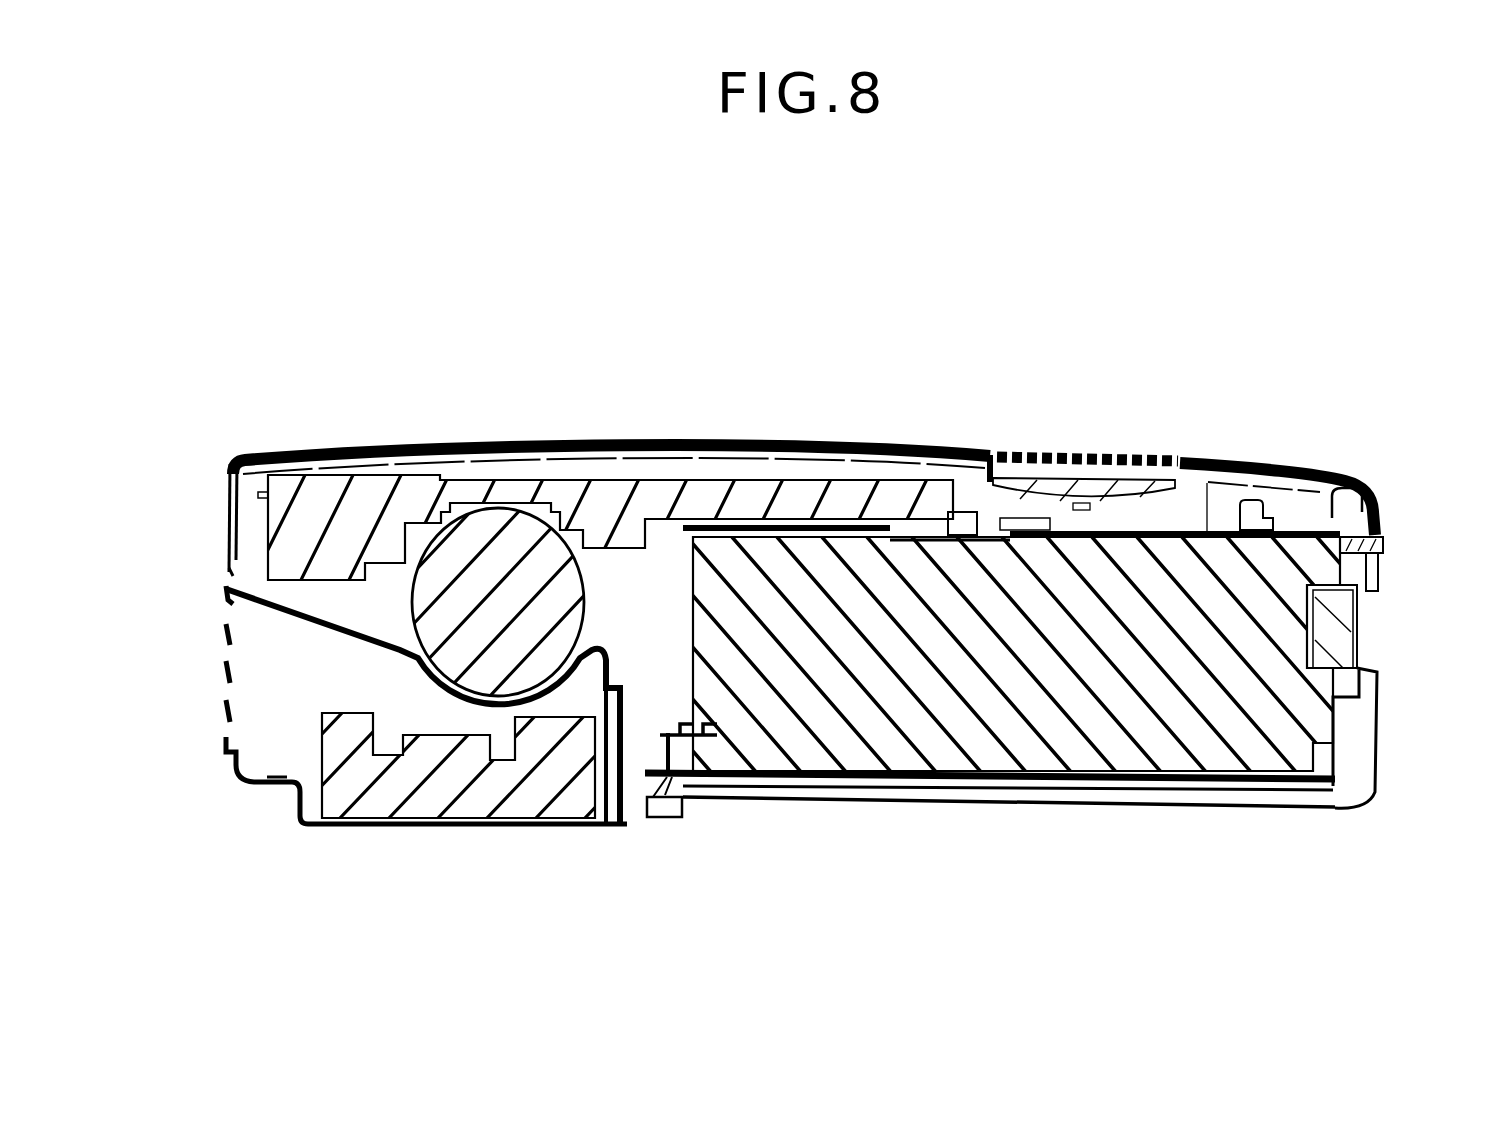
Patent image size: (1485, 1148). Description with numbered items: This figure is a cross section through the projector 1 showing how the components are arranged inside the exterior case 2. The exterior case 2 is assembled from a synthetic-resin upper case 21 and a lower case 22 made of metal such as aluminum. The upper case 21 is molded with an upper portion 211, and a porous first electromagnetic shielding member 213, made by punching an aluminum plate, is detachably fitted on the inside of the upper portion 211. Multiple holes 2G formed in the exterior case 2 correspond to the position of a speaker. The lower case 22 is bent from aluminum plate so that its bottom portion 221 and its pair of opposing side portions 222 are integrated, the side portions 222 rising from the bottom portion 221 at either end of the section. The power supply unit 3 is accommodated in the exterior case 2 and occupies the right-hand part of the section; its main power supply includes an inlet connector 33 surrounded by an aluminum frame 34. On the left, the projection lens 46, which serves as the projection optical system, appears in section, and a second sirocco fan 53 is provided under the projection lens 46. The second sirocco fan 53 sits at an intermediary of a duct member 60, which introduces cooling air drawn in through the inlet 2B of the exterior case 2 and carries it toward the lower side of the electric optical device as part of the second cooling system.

The projector 1 is at (996, 350).
The exterior case 2 is at (803, 440).
The upper case 21 is at (667, 443).
The upper portion 211 is at (940, 446).
The multiple holes 2G is at (1087, 455).
The first electromagnetic shielding member 213 is at (1270, 483).
The aluminum frame 34 is at (1330, 488).
The inlet connector 33 is at (1380, 590).
The power supply unit 3 is at (1200, 573).
The projection lens 46 is at (552, 604).
The duct member 60 is at (300, 628).
The second sirocco fan 53 is at (470, 803).
The inlet 2B is at (224, 655).
The side portions 222 is at (230, 540).
The lower case 22 is at (876, 806).
The bottom portion 221 is at (782, 806).